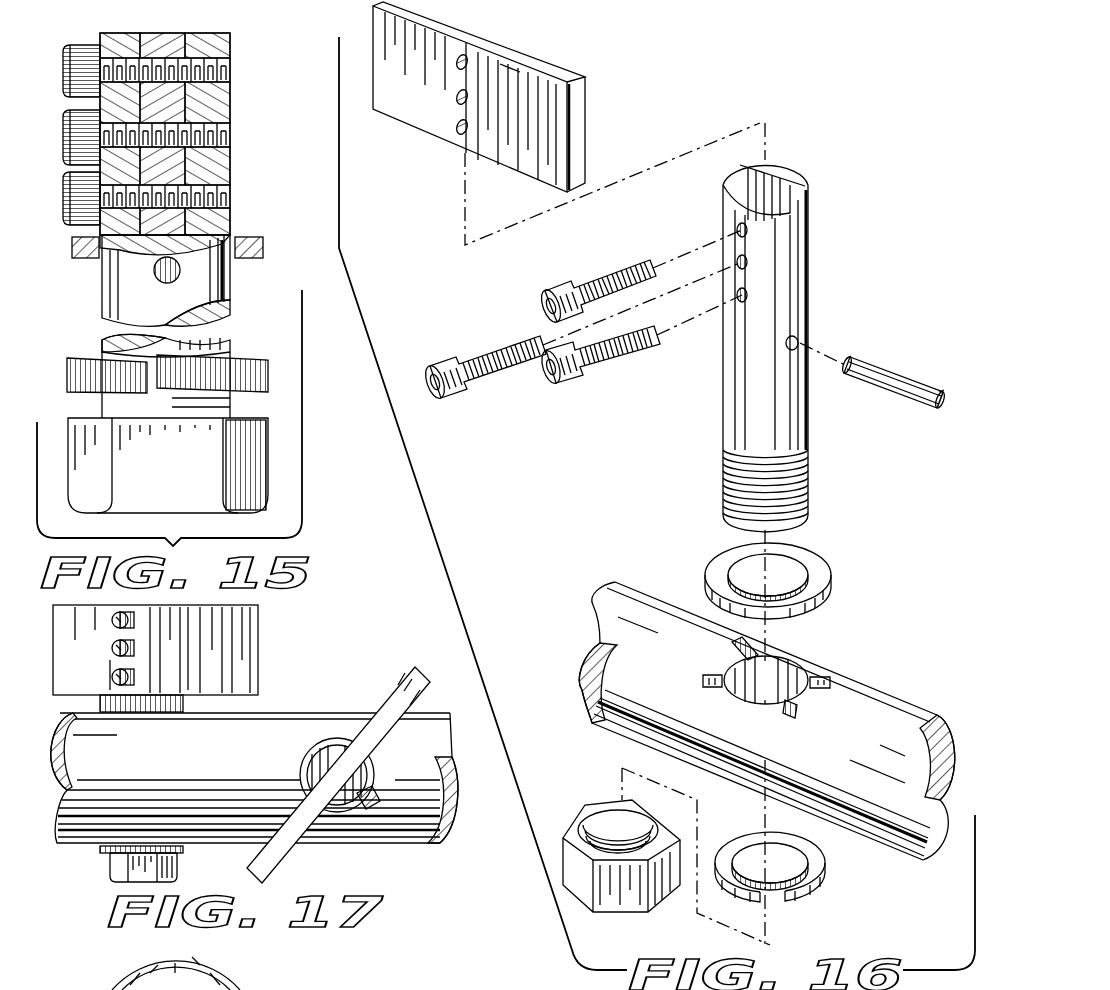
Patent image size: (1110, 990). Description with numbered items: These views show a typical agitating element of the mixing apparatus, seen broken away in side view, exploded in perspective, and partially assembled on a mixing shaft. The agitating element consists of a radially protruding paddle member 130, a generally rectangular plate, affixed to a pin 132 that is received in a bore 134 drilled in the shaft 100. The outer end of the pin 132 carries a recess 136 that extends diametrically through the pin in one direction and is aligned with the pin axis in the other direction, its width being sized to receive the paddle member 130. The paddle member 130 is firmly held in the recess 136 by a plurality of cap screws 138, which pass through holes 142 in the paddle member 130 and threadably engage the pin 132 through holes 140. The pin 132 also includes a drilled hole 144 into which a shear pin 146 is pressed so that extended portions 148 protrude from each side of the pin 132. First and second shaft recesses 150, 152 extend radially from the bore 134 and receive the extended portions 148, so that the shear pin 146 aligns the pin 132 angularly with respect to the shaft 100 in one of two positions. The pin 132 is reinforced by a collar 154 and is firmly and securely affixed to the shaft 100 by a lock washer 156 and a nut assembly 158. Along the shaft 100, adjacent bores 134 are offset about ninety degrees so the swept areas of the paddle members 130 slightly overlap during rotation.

In FIG. 17, the shaft 100 is at (310, 715).
In FIG. 16, the shaft 100 is at (893, 702).
In FIG. 15, the paddle member 130 is at (183, 33).
In FIG. 17, the paddle member 130 is at (258, 622).
In FIG. 16, the paddle member 130 is at (555, 72).
In FIG. 16, the pin 132 is at (776, 343).
In FIG. 16, the bore 134 is at (793, 166).
In FIG. 16, the recess 136 is at (737, 178).
In FIG. 15, the cap screws 138 is at (232, 67).
In FIG. 17, the cap screws 138 is at (112, 677).
In FIG. 16, the cap screws 138 is at (622, 270).
In FIG. 16, the holes 140 is at (722, 296).
In FIG. 16, the holes 142 is at (455, 64).
In FIG. 16, the drilled hole 144 is at (788, 350).
In FIG. 15, the shear pin 146 is at (155, 275).
In FIG. 16, the shear pin 146 is at (893, 380).
In FIG. 16, the extended portions 148 is at (862, 334).
In FIG. 16, the first shaft recess 150 is at (735, 640).
In FIG. 16, the second shaft recess 152 is at (706, 668).
In FIG. 15, the collar 154 is at (263, 244).
In FIG. 17, the collar 154 is at (130, 712).
In FIG. 16, the collar 154 is at (815, 563).
In FIG. 15, the lock washer 156 is at (262, 362).
In FIG. 17, the lock washer 156 is at (100, 849).
In FIG. 16, the lock washer 156 is at (820, 885).
In FIG. 15, the nut assembly 158 is at (168, 465).
In FIG. 17, the nut assembly 158 is at (110, 870).
In FIG. 16, the nut assembly 158 is at (580, 792).